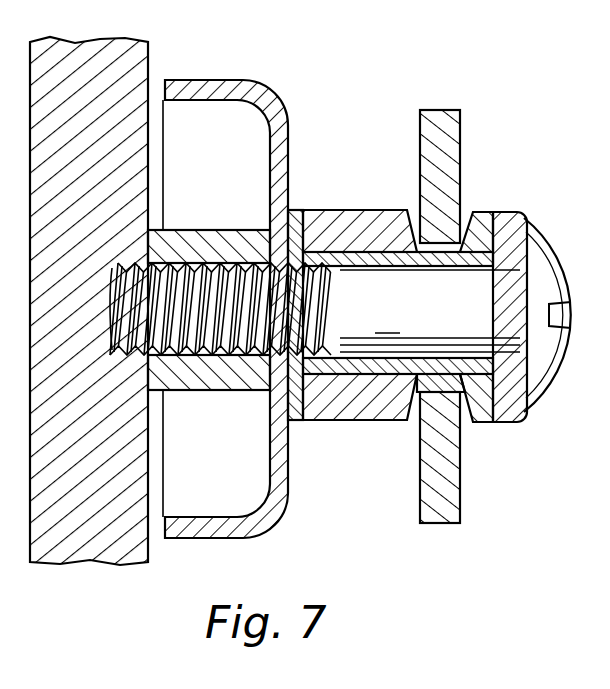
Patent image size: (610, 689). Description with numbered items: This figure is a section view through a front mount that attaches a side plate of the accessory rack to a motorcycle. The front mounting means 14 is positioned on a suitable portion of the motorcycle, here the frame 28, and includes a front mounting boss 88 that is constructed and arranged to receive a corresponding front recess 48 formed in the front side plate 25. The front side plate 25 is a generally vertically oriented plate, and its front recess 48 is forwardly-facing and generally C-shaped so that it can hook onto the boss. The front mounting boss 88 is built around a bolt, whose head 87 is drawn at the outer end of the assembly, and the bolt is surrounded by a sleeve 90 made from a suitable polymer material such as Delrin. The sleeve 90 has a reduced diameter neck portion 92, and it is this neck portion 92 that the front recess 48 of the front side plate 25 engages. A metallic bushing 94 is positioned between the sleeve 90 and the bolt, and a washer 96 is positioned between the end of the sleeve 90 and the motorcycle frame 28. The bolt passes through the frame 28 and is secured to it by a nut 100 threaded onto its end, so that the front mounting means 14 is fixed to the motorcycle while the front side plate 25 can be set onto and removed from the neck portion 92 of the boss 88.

The frame 28 is at (262, 93).
The front side plate 25 is at (452, 120).
The front mounting boss 88 is at (348, 196).
The washer 96 is at (290, 210).
The sleeve 90 is at (389, 210).
The reduced diameter neck portion 92 is at (443, 242).
The metallic bushing 94 is at (512, 232).
The front recess 48 is at (443, 393).
The screw head 87 is at (550, 347).
The nut 100 is at (200, 392).
The front mounting means 14 is at (462, 476).